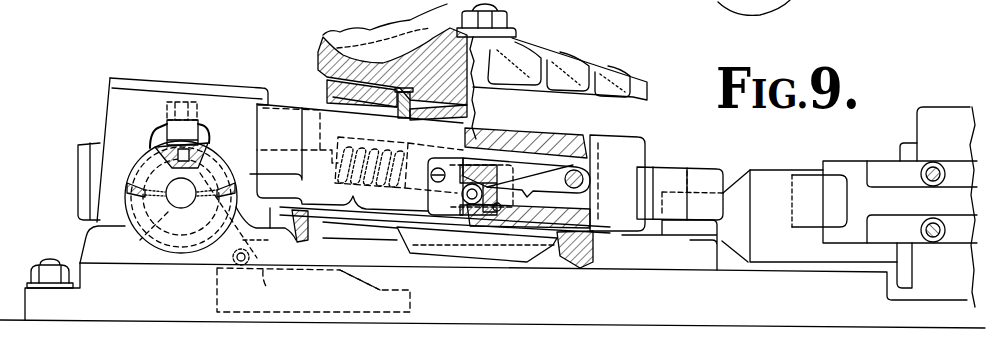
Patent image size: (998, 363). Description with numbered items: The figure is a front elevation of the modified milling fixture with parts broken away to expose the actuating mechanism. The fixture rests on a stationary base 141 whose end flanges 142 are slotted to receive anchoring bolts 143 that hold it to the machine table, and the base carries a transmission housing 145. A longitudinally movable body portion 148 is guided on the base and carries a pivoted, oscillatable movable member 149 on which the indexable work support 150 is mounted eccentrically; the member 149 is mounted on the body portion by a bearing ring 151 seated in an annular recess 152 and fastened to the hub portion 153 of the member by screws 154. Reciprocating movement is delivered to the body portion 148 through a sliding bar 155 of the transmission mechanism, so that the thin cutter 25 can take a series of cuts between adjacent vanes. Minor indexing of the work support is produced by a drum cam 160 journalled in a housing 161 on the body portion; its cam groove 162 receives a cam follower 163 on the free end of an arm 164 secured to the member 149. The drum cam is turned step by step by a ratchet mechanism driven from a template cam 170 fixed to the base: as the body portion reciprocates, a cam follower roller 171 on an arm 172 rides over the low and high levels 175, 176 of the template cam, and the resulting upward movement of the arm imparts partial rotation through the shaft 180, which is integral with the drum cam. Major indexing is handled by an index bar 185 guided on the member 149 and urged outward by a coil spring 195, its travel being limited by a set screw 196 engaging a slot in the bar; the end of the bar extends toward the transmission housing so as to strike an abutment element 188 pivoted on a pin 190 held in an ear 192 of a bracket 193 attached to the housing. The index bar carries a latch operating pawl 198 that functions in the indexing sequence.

The thin cutter 25 is at (418, 30).
The base 141 is at (107, 282).
The end flanges 142 is at (37, 280).
The anchoring bolts 143 is at (49, 268).
The transmission housing 145 is at (946, 118).
The body portion 148 is at (650, 262).
The movable member 149 is at (637, 156).
The indexable work support 150 is at (612, 120).
The bearing ring 151 is at (500, 262).
The annular recess 152 is at (575, 258).
The hub portion 153 is at (344, 204).
The screws 154 is at (345, 228).
The sliding bar 155 is at (768, 172).
The drum cam 160 is at (148, 170).
The housing 161 is at (108, 113).
The cam groove 162 is at (150, 148).
The cam follower 163 is at (210, 148).
The arm 164 is at (193, 133).
The template cam 170 is at (225, 288).
The cam follower roller 171 is at (250, 257).
The arm 172 is at (242, 248).
The low level 175 is at (395, 288).
The high level 176 is at (267, 288).
The shaft 180 is at (176, 198).
The index bar 185 is at (712, 172).
The abutment element 188 is at (797, 200).
The pin 190 is at (712, 6).
The ear 192 is at (835, 165).
The bracket 193 is at (885, 165).
The coil spring 195 is at (378, 137).
The set screw 196 is at (412, 118).
The latch operating pawl 198 is at (535, 196).